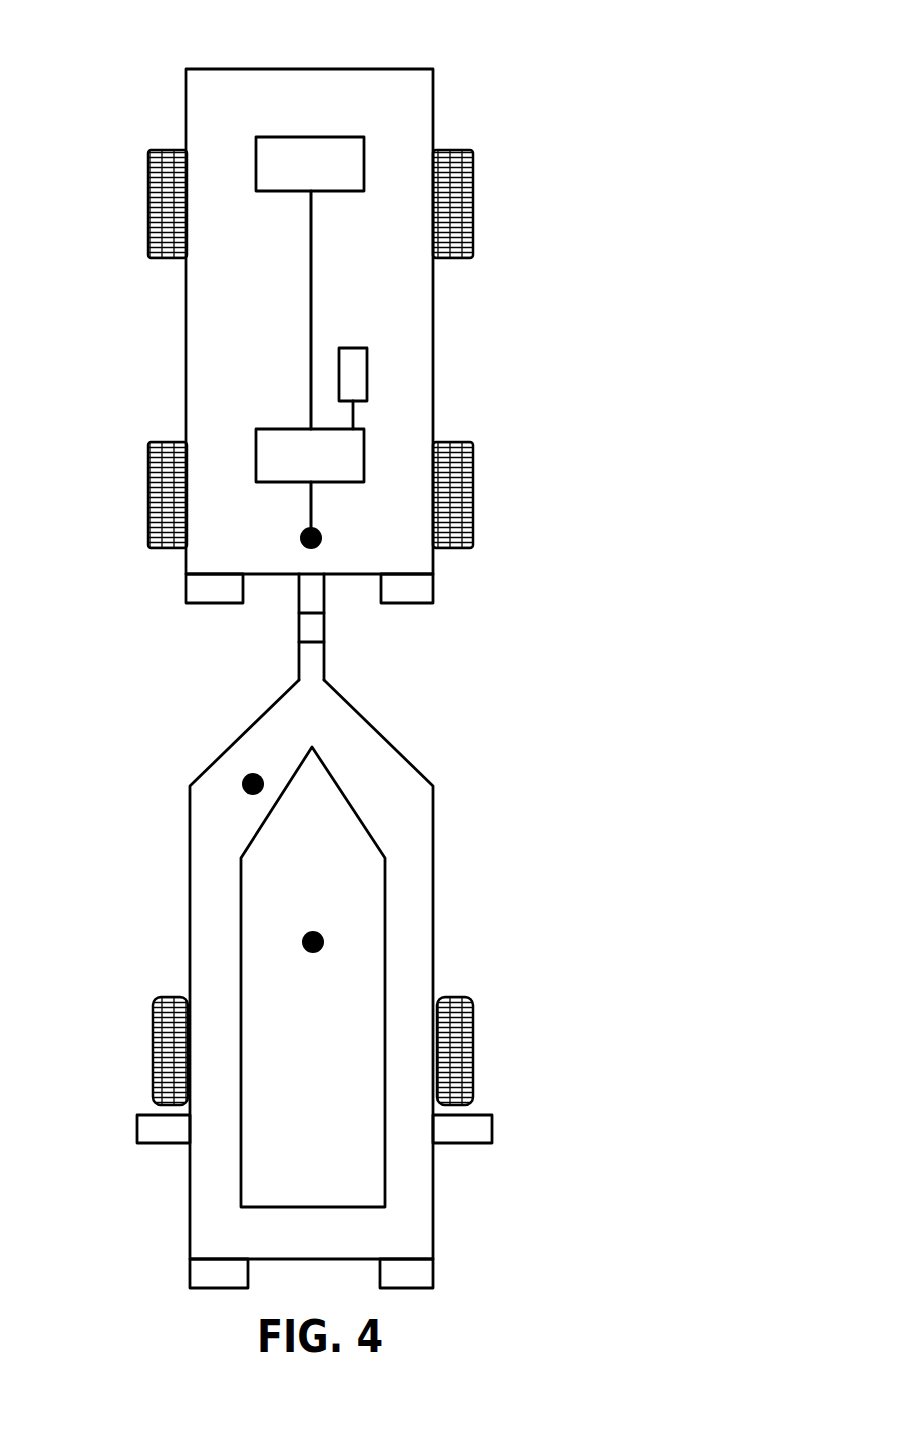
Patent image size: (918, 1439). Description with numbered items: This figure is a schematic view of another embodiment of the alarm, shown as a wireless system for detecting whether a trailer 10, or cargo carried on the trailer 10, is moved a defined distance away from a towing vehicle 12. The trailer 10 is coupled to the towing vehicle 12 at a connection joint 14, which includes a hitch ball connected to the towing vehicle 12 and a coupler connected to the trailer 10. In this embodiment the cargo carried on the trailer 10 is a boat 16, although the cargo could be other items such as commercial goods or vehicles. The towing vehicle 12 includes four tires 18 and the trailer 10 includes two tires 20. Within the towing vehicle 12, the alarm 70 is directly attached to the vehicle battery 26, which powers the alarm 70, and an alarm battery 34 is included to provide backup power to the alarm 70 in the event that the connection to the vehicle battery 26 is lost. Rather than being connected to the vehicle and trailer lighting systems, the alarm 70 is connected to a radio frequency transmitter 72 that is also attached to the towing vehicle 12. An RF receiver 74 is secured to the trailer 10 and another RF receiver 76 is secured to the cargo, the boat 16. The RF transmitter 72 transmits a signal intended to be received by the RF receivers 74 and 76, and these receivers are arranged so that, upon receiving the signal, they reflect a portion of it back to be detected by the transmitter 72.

The trailer 10 is at (423, 769).
The towing vehicle 12 is at (412, 78).
The connection joint 14 is at (320, 627).
The boat 16 is at (378, 982).
The tires 18 is at (150, 217).
The tires 20 is at (155, 1050).
The vehicle battery 26 is at (282, 162).
The alarm battery 34 is at (355, 365).
The alarm 70 is at (268, 473).
The RF transmitter 72 is at (302, 546).
The RF receiver 74 is at (243, 784).
The RF receiver 76 is at (320, 933).